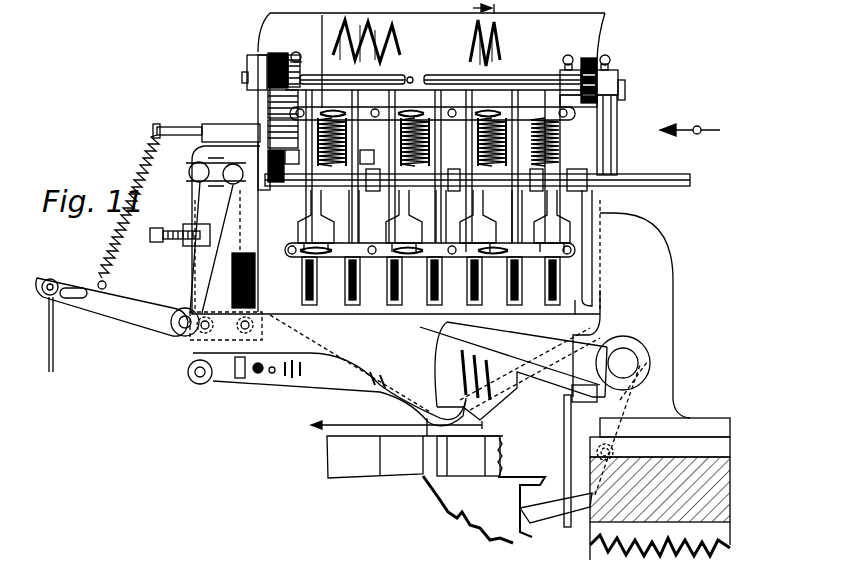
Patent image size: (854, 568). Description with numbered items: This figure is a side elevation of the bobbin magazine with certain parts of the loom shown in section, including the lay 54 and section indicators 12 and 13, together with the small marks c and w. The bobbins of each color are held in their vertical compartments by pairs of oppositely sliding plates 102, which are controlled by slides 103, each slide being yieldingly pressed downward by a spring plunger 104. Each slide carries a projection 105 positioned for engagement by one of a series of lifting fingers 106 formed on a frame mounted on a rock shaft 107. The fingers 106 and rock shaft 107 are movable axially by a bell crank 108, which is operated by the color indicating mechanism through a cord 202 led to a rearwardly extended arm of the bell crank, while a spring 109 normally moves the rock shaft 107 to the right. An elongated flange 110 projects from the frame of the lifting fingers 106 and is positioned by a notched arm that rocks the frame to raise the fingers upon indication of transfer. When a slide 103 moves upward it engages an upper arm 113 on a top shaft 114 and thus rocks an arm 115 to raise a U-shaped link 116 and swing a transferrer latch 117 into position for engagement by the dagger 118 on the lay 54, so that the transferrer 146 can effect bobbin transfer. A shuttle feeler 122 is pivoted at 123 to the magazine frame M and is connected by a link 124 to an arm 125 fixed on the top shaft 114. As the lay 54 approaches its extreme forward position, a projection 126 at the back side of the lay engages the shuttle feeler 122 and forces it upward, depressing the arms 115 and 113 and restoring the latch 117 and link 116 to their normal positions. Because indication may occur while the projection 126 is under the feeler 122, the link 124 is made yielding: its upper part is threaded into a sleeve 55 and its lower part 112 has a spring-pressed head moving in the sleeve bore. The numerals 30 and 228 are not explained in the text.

The magazine frame M is at (441, 42).
The spring plunger 104 is at (432, 60).
The section line 13 is at (388, 218).
The section line 12 is at (690, 125).
The reference c is at (725, 132).
The arm 125 is at (248, 92).
The sleeve 55 is at (258, 116).
The link 124 is at (272, 121).
The projection 105 is at (292, 158).
The upper arm 113 is at (412, 78).
The top shaft 114 is at (436, 80).
The arm 115 is at (620, 78).
The lifting fingers 106 is at (435, 172).
The elongated flange 110 is at (612, 182).
The spring 109 is at (140, 185).
The rock shaft 107 is at (427, 224).
The slides 103 is at (310, 212).
The sliding plates 102 is at (305, 290).
The bracket 228 is at (592, 257).
The lower part of the connector 112 is at (262, 266).
The cord 202 is at (53, 322).
The bell crank 108 is at (118, 313).
The shuttle feeler 122 is at (340, 366).
The pivot 123 is at (191, 378).
The transferrer 146 is at (552, 372).
The U-shaped link 116 is at (568, 437).
The projection 126 is at (437, 452).
The dagger 118 is at (546, 476).
The box 30 is at (372, 470).
The lay 54 is at (465, 517).
The transferrer latch 117 is at (545, 520).
The base block w is at (732, 536).